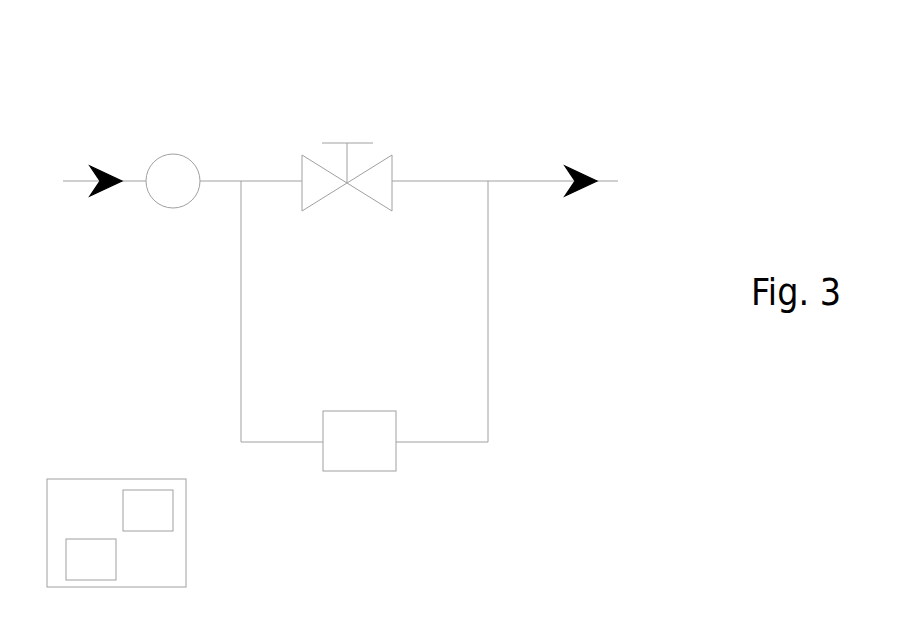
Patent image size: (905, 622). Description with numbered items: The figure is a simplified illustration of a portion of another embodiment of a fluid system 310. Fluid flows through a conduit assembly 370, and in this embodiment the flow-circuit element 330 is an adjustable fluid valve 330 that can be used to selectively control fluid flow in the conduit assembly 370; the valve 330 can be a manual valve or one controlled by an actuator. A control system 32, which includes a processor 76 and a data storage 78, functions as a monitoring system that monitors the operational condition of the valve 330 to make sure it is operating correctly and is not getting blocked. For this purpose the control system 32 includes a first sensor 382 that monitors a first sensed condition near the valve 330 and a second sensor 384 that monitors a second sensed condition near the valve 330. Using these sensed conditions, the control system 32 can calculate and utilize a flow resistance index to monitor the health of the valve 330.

The fluid system 310 is at (474, 99).
The flow-circuit element 330 is at (360, 130).
The conduit assembly 370 is at (543, 181).
The second sensor 384 is at (174, 154).
The first sensor 382 is at (347, 455).
The control system 32 is at (73, 468).
The data storage 78 is at (160, 524).
The processor 76 is at (103, 573).